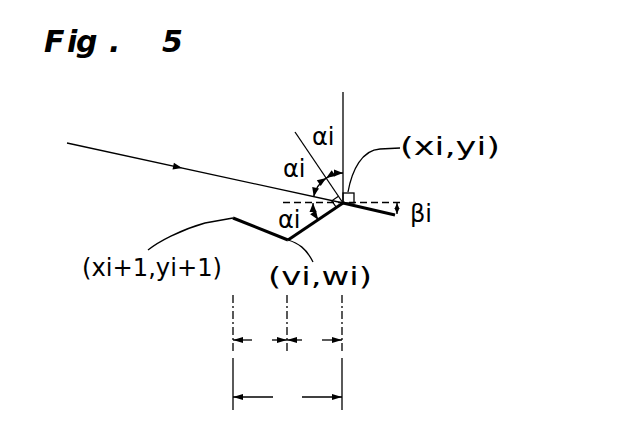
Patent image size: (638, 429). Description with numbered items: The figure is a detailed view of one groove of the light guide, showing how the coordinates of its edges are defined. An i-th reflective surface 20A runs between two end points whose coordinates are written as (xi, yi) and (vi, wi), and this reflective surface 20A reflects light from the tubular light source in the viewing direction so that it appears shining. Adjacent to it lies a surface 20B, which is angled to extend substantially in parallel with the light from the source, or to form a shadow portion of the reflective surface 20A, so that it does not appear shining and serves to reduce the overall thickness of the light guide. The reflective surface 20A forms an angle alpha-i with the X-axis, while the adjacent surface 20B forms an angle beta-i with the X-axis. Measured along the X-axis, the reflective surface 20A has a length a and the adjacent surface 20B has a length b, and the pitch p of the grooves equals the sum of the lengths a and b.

The reflective surface 20A is at (303, 228).
The surface 20B is at (259, 222).
The length of reflective surface in X-axis direction a is at (314, 341).
The length of adjacent surface in X-axis direction b is at (260, 341).
The pitch p is at (287, 397).